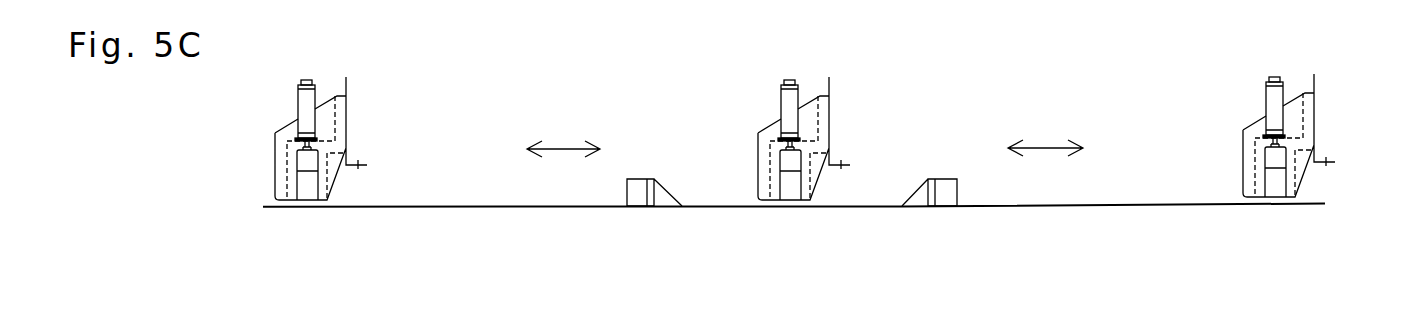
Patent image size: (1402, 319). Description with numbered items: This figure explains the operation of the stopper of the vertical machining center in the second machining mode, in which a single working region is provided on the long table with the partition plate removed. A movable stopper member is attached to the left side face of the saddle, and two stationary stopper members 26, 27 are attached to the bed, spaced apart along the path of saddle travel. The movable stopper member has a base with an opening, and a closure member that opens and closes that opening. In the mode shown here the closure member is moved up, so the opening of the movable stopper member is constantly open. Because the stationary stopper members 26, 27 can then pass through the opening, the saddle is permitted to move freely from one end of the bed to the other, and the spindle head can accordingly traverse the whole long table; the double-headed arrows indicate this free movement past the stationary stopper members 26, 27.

The stationary stopper member 26 is at (932, 206).
The stationary stopper member 27 is at (653, 206).